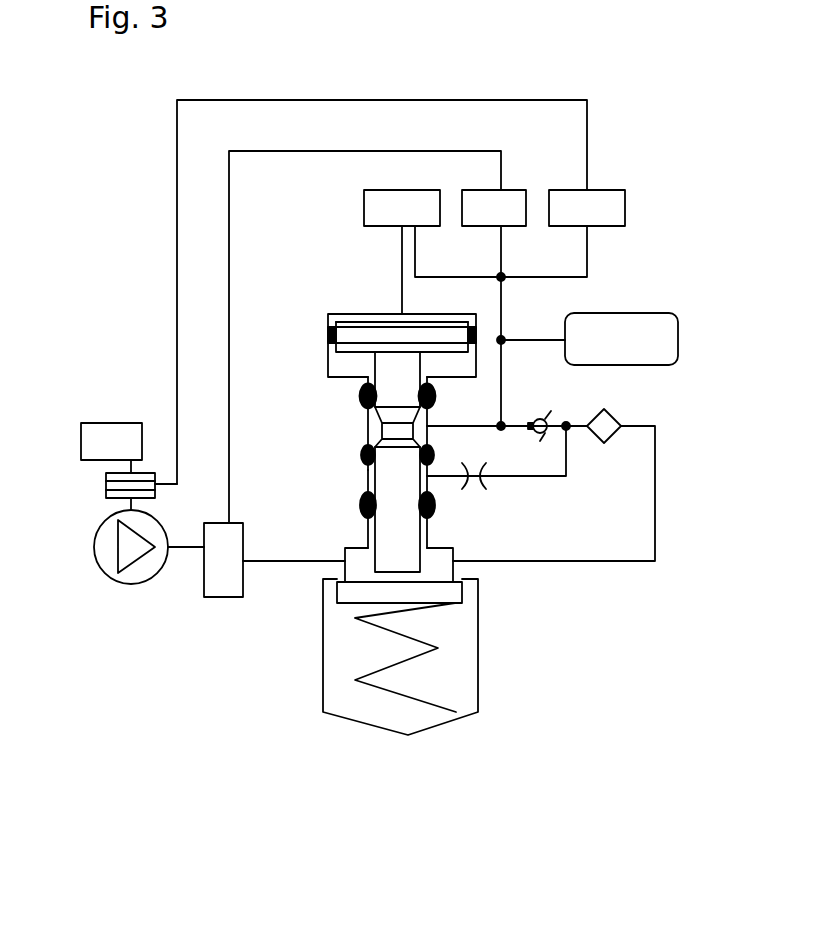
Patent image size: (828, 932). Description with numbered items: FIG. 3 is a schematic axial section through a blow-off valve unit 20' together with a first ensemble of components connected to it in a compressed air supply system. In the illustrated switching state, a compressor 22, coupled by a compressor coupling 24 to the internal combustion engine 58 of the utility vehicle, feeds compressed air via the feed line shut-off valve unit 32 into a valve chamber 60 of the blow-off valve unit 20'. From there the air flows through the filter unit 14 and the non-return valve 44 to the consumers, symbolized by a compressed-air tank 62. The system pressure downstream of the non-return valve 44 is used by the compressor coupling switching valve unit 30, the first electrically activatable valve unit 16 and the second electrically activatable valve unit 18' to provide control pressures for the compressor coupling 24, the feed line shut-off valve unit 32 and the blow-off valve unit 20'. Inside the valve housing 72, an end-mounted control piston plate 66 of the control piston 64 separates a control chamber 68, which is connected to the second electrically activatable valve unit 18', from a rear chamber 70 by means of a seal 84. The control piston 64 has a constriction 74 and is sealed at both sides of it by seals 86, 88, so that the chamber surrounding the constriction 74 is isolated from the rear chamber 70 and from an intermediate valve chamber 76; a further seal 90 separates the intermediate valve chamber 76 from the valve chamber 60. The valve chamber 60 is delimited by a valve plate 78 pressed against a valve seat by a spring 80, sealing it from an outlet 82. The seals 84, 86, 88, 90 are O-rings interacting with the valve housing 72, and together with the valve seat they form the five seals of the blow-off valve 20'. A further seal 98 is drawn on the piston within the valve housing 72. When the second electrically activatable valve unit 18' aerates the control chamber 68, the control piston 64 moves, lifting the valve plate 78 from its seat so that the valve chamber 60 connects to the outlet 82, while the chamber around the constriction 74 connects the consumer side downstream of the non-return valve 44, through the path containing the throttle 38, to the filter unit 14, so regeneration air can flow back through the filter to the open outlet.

The filter unit 14 is at (612, 437).
The first electrically activatable valve unit 16 is at (510, 190).
The second electrically activatable valve unit 18' is at (372, 208).
The blow-off valve unit 20' is at (281, 435).
The compressor 22 is at (123, 584).
The compressor coupling 24 is at (105, 490).
The compressor coupling switching valve unit 30 is at (625, 208).
The feed line shut-off valve unit 32 is at (218, 597).
The throttle 38 is at (478, 483).
The non-return valve 44 is at (551, 411).
The internal combustion engine 58 is at (80, 438).
The valve chamber 60 is at (445, 571).
The compressed-air tank 62 is at (630, 313).
The control piston 64 is at (415, 367).
The control piston plate 66 is at (345, 356).
The control chamber 68 is at (331, 317).
The rear chamber 70 is at (342, 368).
The valve housing 72 is at (432, 313).
The constriction 74 is at (378, 413).
The intermediate valve chamber 76 is at (372, 481).
The valve plate 78 is at (339, 598).
The spring 80 is at (362, 672).
The outlet 82 is at (443, 727).
The seal 84 is at (328, 335).
The seal 86 is at (437, 408).
The seal 88 is at (445, 452).
The further seal 90 is at (433, 512).
The O-ring seal 98 is at (369, 437).